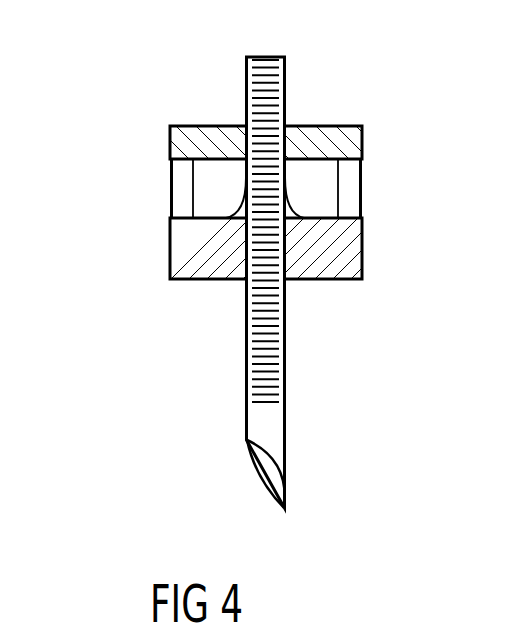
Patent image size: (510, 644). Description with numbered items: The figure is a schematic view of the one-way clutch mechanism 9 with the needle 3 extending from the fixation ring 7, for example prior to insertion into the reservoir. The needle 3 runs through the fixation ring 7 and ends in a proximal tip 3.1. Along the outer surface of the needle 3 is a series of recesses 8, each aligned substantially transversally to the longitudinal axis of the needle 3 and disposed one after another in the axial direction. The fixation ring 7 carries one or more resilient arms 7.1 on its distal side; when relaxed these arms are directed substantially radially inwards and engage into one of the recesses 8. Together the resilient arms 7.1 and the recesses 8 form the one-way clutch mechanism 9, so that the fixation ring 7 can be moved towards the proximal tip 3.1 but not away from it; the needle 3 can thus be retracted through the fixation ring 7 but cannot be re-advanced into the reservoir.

The needle 3 is at (282, 263).
The proximal tip 3.1 is at (277, 463).
The fixation ring 7 is at (172, 255).
The resilient arms 7.1 is at (295, 198).
The recesses 8 is at (286, 103).
The one-way clutch mechanism 9 is at (240, 190).